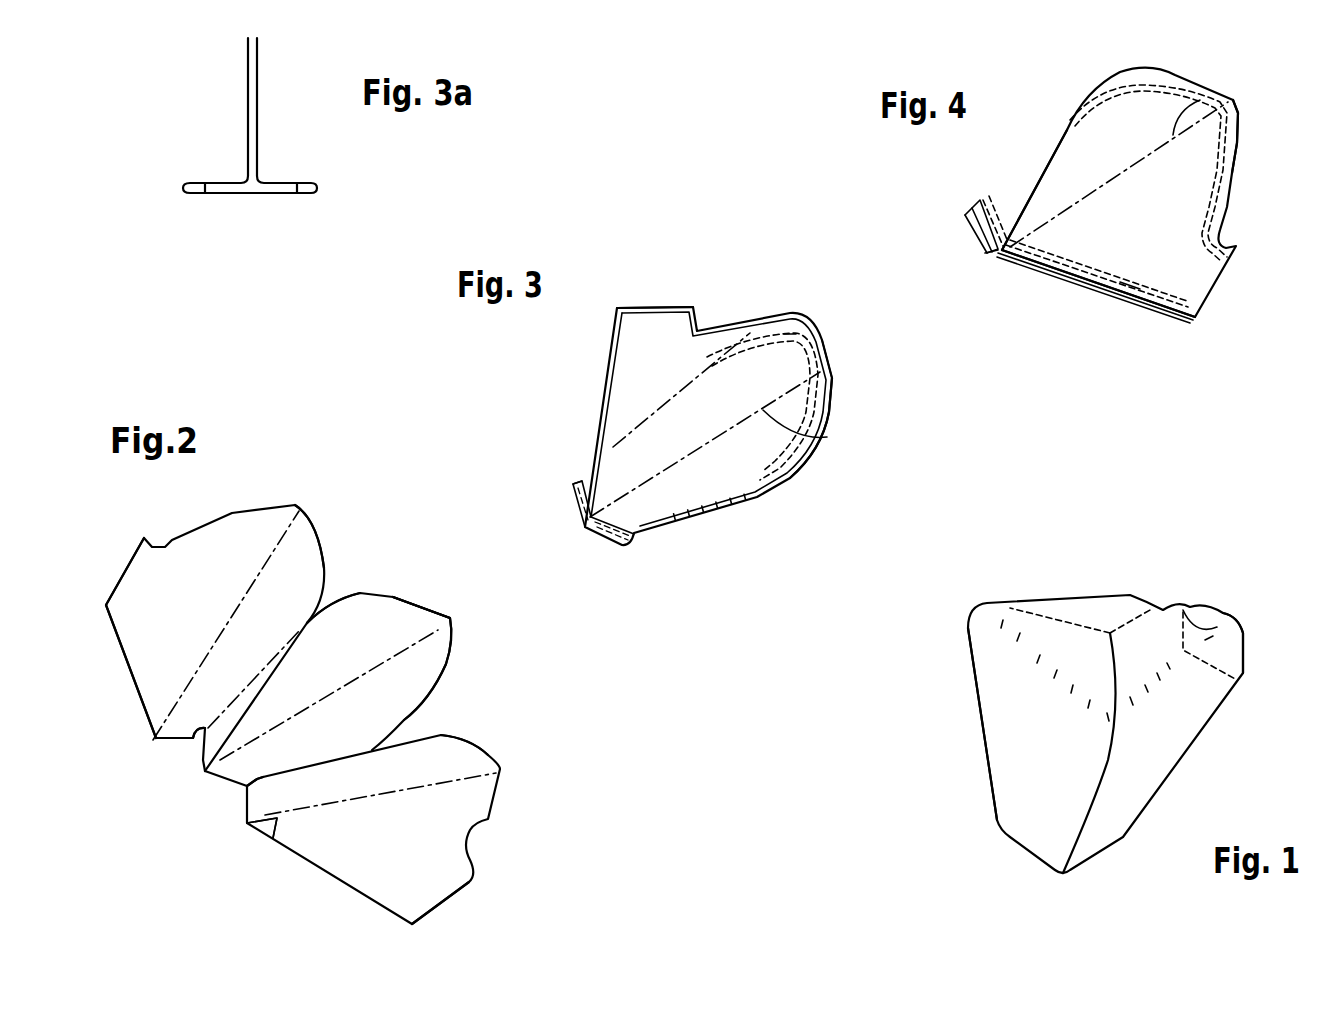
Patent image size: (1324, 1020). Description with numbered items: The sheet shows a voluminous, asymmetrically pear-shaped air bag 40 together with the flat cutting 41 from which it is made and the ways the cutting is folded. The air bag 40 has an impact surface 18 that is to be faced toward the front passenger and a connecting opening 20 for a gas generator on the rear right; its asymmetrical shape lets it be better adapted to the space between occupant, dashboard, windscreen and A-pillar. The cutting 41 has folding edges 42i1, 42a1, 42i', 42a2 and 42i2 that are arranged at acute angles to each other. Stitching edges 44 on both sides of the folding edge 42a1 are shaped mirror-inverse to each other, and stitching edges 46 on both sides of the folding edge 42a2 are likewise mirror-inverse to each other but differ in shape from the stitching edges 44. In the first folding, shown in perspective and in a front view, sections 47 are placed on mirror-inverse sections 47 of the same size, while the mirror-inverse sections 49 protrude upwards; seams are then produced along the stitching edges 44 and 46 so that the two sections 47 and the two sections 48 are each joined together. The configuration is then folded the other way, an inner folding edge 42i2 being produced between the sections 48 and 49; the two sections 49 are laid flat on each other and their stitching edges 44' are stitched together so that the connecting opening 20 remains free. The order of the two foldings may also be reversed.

In FIG. 1, the impact surface 18 is at (1018, 737).
In FIG. 4, the connecting opening 20 is at (1217, 287).
In FIG. 1, the connecting opening 20 is at (1233, 655).
In FIG. 1, the air bag 40 is at (1167, 585).
In FIG. 2, the cutting 41 is at (436, 582).
In FIG. 3A, the folding edge 42a1 is at (317, 188).
In FIG. 3, the folding edge 42a1 is at (747, 497).
In FIG. 2, the folding edge 42a1 is at (197, 734).
In FIG. 4, the folding edge 42a1 is at (965, 222).
In FIG. 3A, the folding edge 42a2 is at (183, 188).
In FIG. 3, the folding edge 42a2 is at (585, 477).
In FIG. 2, the folding edge 42a2 is at (248, 787).
In FIG. 4, the folding edge 42a2 is at (980, 203).
In FIG. 3, the folding edge 42i1 is at (813, 432).
In FIG. 2, the folding edge 42i1 is at (165, 723).
In FIG. 2, the inner folding edge 42i2 is at (274, 818).
In FIG. 4, the inner folding edge 42i2 is at (1200, 100).
In FIG. 2, the folding edge 42i' is at (470, 619).
In FIG. 4, the folding edge 42i' is at (982, 287).
In FIG. 3, the stitching edges 44 is at (840, 421).
In FIG. 2, the stitching edges 44 is at (353, 572).
In FIG. 4, the stitching edges 44' is at (1276, 136).
In FIG. 3, the stitching edges 46 is at (769, 337).
In FIG. 2, the stitching edges 46 is at (446, 685).
In FIG. 3A, the sections 47 is at (292, 193).
In FIG. 3, the sections 47 is at (647, 503).
In FIG. 3A, the sections 48 is at (218, 193).
In FIG. 3, the sections 48 is at (573, 498).
In FIG. 4, the sections 48 is at (1067, 140).
In FIG. 3A, the sections 49 is at (257, 86).
In FIG. 3, the sections 49 is at (653, 327).
In FIG. 4, the sections 49 is at (1100, 253).